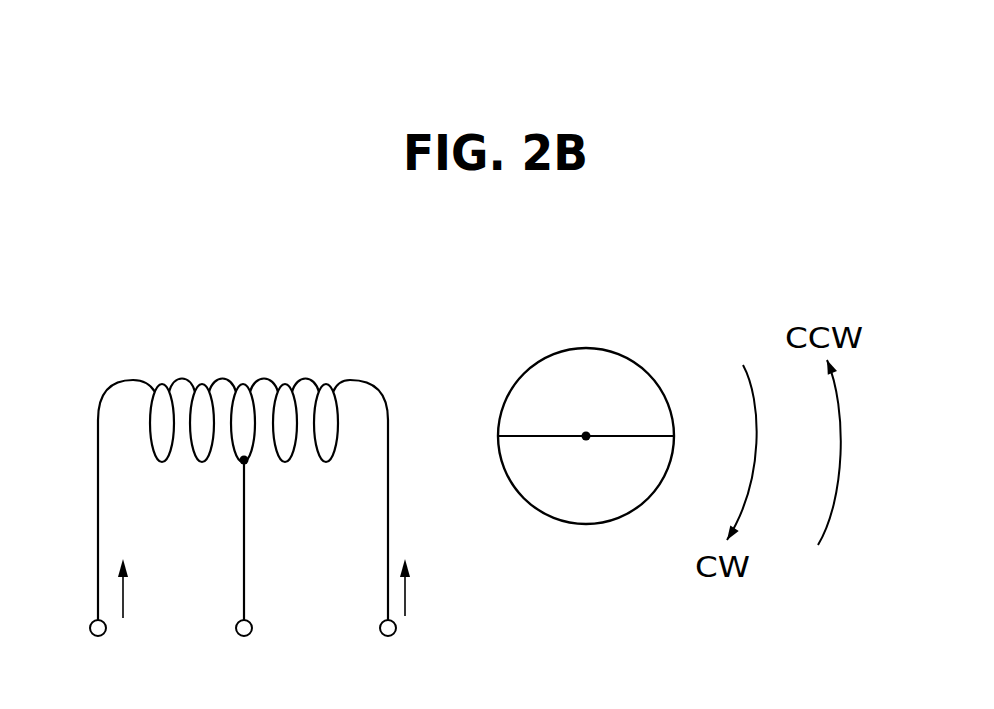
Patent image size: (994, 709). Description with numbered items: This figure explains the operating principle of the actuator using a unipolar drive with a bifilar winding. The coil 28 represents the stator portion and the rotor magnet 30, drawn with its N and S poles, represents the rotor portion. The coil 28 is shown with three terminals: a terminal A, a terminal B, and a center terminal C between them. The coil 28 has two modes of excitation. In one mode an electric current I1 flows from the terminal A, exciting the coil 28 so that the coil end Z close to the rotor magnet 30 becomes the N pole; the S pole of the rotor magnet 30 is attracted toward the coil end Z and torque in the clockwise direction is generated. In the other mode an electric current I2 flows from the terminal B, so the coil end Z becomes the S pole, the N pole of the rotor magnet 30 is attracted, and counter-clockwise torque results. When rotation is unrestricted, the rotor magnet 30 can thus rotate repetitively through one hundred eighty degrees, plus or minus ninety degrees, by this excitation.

The coil 28 is at (263, 444).
The rotor magnet 30 is at (589, 346).
The terminal A is at (98, 649).
The terminal B is at (388, 649).
The coil center tap terminal C is at (244, 649).
The coil end Z is at (418, 394).
The electric current I1 is at (125, 573).
The electric current I2 is at (406, 572).